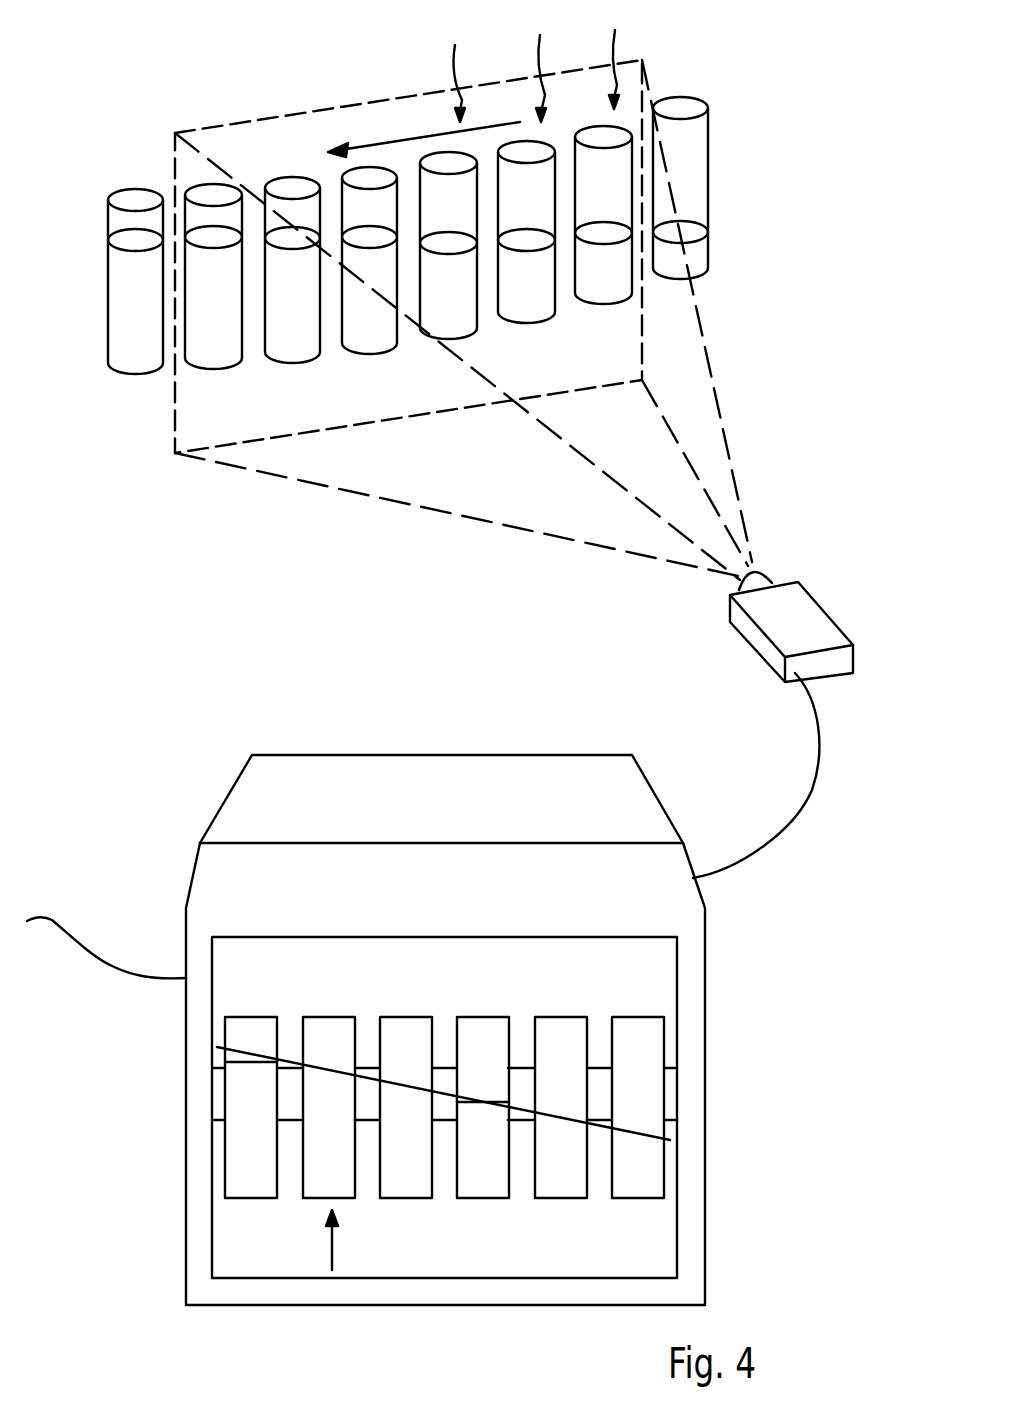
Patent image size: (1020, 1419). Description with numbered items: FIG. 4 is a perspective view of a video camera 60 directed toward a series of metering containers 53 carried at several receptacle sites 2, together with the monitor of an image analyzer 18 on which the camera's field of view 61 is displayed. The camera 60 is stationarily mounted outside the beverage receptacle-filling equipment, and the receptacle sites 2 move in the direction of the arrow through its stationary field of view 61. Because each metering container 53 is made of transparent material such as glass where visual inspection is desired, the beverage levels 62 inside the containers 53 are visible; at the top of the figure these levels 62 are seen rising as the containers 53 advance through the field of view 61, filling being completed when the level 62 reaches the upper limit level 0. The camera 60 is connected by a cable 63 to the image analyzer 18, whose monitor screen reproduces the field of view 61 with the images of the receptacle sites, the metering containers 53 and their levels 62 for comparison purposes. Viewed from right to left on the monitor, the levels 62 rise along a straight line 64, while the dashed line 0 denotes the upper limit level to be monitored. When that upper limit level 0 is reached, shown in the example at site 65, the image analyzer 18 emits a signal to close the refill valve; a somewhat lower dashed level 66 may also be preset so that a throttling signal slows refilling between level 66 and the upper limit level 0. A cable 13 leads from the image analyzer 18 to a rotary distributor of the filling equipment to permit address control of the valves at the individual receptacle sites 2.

The receptacle sites 2 is at (541, 61).
The cable 13 is at (80, 940).
The image analyzer 18 is at (300, 775).
The metering container 53 is at (697, 160).
The video camera 60 is at (817, 628).
The field of view 61 is at (298, 133).
The beverage level 62 is at (384, 250).
The cable 63 is at (780, 838).
The straight line 64 is at (363, 1073).
The site 65 is at (335, 1250).
The lower level 66 is at (288, 1123).
The upper limit level 0 is at (288, 1066).